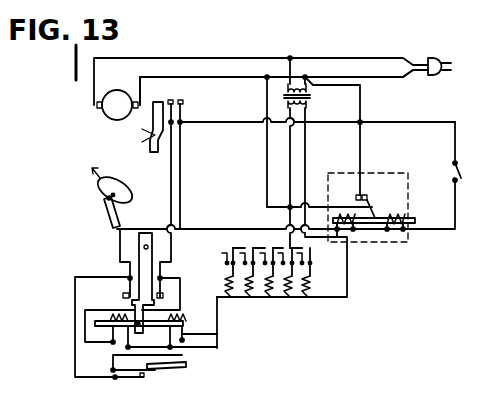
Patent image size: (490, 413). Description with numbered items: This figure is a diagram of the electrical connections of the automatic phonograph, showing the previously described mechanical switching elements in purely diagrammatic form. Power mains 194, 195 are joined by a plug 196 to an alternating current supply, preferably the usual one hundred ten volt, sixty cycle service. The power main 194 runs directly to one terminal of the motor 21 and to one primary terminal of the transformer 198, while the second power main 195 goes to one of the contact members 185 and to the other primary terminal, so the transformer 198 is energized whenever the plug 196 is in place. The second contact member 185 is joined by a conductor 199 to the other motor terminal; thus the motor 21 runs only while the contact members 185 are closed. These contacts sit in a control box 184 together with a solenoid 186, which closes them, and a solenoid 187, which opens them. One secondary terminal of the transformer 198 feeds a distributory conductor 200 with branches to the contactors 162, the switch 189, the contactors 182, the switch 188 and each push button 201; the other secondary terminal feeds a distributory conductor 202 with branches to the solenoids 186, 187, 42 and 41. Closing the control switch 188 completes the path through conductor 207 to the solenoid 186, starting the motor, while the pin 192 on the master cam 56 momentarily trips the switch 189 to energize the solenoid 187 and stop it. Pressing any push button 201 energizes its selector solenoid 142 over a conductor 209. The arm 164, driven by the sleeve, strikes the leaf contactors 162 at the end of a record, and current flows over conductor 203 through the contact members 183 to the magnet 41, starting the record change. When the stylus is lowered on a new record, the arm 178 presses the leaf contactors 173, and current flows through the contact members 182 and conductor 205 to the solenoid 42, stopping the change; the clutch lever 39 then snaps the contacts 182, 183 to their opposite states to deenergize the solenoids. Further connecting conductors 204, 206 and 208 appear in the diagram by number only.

The power main 194 is at (92, 88).
The power main 195 is at (392, 77).
The plug 196 is at (433, 59).
The motor 21 is at (104, 116).
The transformer 198 is at (300, 98).
The distributory conductor 200 is at (237, 121).
The conductor 199 is at (141, 90).
The leaf contactors 162 is at (178, 100).
The conductor 203 is at (173, 183).
The switch 188 is at (460, 171).
The conductor 207 is at (450, 230).
The conductor 208 is at (218, 228).
The distributory conductor 202 is at (306, 145).
The control box 184 is at (408, 240).
The contact members 185 is at (364, 194).
The solenoid 187 is at (340, 216).
The solenoid 186 is at (390, 216).
The arm 164 is at (152, 138).
The pin 192 is at (85, 200).
The master cam 56 is at (100, 195).
The switch 189 is at (104, 218).
The clutch lever 39 is at (148, 257).
The contact members 182 is at (125, 298).
The contact members 183 is at (172, 299).
The contact bracket 204 is at (182, 286).
The conductor 205 is at (75, 298).
The magnet 41 is at (113, 332).
The solenoid 42 is at (217, 334).
The conductor 206 is at (183, 355).
The arm 178 is at (183, 367).
The leaf contactors 173 is at (147, 377).
The push button switches 201 is at (228, 255).
The conductor 209 is at (308, 267).
The selector solenoids 142 is at (310, 281).